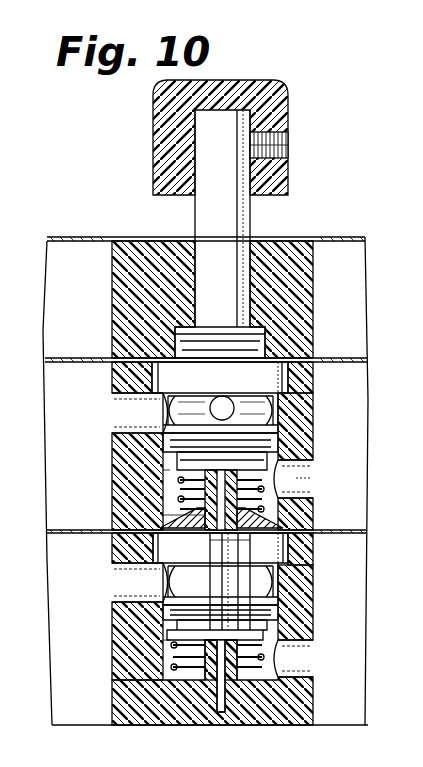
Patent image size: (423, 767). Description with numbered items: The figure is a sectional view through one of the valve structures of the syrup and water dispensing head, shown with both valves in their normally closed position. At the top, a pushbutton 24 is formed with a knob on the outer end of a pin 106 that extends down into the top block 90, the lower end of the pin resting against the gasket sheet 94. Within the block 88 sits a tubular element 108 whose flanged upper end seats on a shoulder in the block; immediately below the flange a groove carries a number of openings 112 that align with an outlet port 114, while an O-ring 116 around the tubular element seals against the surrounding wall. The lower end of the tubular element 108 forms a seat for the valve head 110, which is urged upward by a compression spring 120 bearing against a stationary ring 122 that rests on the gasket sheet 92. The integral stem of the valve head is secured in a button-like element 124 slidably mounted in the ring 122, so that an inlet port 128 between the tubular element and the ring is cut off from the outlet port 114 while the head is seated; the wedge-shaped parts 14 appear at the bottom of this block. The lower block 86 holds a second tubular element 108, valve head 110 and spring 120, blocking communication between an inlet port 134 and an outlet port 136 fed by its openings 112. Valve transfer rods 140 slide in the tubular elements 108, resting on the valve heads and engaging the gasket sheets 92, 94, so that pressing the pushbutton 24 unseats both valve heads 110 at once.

The pushbutton 24 is at (280, 97).
The pin 106 is at (252, 220).
The top block 90 is at (122, 289).
The gasket sheet 94 is at (47, 358).
The tubular element 108 is at (245, 380).
The block 88 is at (306, 372).
The outlet port 114 is at (117, 430).
The openings 112 is at (268, 410).
The O-ring 116 is at (270, 440).
The valve head 110 is at (228, 485).
The button-like element 124 is at (284, 470).
The inlet port 128 is at (300, 492).
The compression spring 120 is at (135, 490).
The ring 122 is at (158, 523).
The wedge 14 is at (221, 518).
The gasket sheet 92 is at (60, 533).
The valve transfer rod 140 is at (218, 546).
The outlet port 136 is at (117, 570).
The lower block 86 is at (313, 607).
The inlet port 134 is at (312, 676).